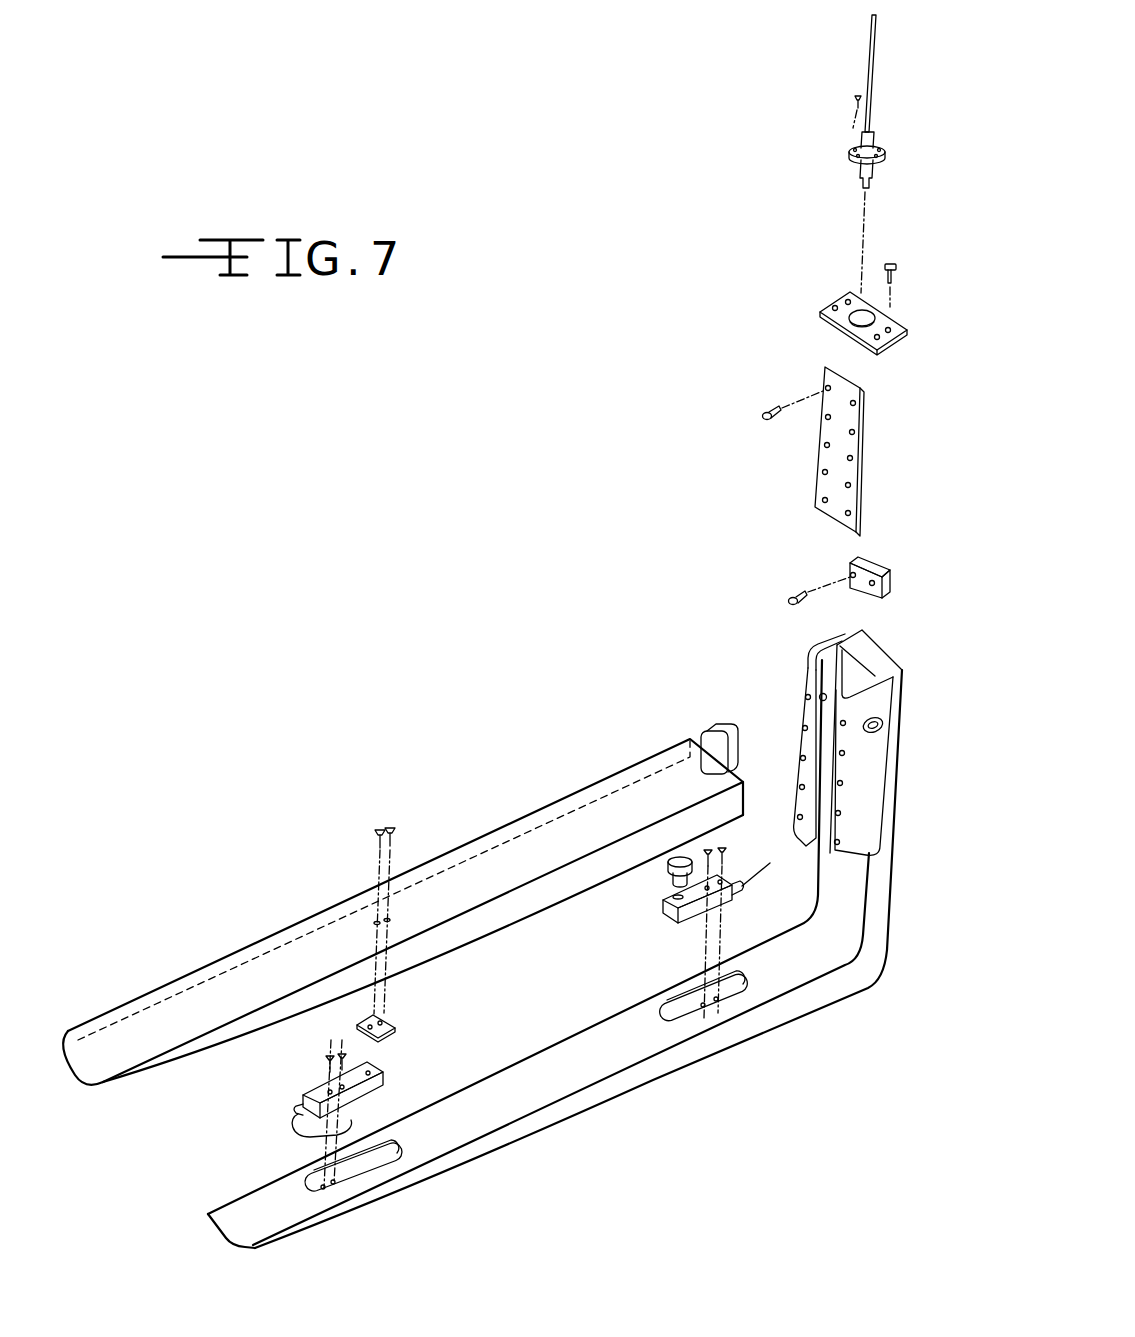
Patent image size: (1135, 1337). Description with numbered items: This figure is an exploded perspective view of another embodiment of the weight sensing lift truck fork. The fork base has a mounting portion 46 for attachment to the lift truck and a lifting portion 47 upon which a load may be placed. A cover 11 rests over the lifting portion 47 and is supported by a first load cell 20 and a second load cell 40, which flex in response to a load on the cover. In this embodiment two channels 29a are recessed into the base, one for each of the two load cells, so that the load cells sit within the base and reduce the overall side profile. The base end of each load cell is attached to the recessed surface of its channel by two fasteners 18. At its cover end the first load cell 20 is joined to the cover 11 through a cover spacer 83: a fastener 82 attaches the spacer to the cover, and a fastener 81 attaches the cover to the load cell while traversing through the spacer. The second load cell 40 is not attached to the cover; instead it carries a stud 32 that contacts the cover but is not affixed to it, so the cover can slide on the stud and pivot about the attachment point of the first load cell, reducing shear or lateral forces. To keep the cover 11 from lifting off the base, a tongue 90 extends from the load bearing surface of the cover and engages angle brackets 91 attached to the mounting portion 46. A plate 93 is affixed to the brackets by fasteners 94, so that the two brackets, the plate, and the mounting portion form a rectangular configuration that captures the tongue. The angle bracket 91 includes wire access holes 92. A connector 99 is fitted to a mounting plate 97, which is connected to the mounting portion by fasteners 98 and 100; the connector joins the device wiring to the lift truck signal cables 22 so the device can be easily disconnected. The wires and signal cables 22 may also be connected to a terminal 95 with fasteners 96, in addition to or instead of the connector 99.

The cover 11 is at (627, 760).
The fasteners 18 is at (708, 843).
The first load cell 20 is at (383, 1093).
The lift truck signal cables 22 is at (867, 43).
The channels 29a is at (368, 1182).
The stud 32 is at (665, 889).
The second load cell 40 is at (662, 864).
The mounting portion 46 is at (860, 898).
The lifting portion 47 is at (797, 980).
The fastener 81 is at (376, 838).
The fastener 82 is at (389, 826).
The cover spacer 83 is at (357, 1020).
The tongue 90 is at (708, 740).
The angle brackets 91 is at (799, 672).
The wire access holes 92 is at (858, 720).
The plate 93 is at (820, 453).
The fasteners 94 is at (768, 404).
The terminal 95 is at (852, 591).
The fasteners 96 is at (792, 593).
The mounting plate 97 is at (818, 308).
The fastener 98 is at (880, 274).
The connector 99 is at (848, 148).
The fastener 100 is at (851, 101).